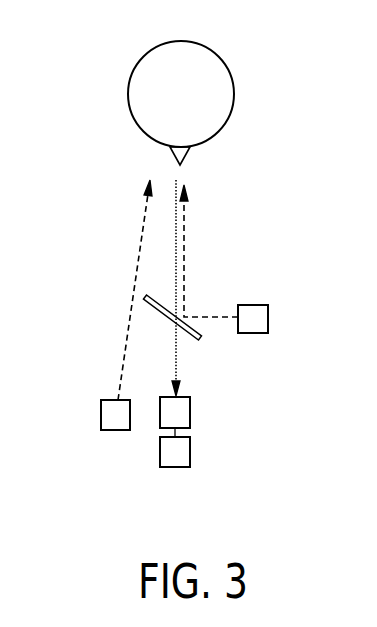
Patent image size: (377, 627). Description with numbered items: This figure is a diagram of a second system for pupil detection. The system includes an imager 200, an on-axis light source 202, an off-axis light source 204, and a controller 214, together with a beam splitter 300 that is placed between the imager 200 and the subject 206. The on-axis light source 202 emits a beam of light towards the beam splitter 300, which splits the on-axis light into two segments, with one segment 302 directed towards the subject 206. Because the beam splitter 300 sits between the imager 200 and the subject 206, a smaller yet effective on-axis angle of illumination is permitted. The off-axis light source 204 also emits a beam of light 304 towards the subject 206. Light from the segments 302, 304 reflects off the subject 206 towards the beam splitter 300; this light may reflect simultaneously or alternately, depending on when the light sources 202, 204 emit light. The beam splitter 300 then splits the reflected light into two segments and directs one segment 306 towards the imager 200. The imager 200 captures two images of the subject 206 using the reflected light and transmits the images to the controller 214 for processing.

The imager 200 is at (190, 412).
The on-axis light source 202 is at (268, 321).
The off-axis light source 204 is at (101, 415).
The subject 206 is at (236, 88).
The controller 214 is at (190, 457).
The beam splitter 300 is at (200, 339).
The segment 302 is at (187, 228).
The beam of light 304 is at (130, 296).
The segment 306 is at (178, 365).